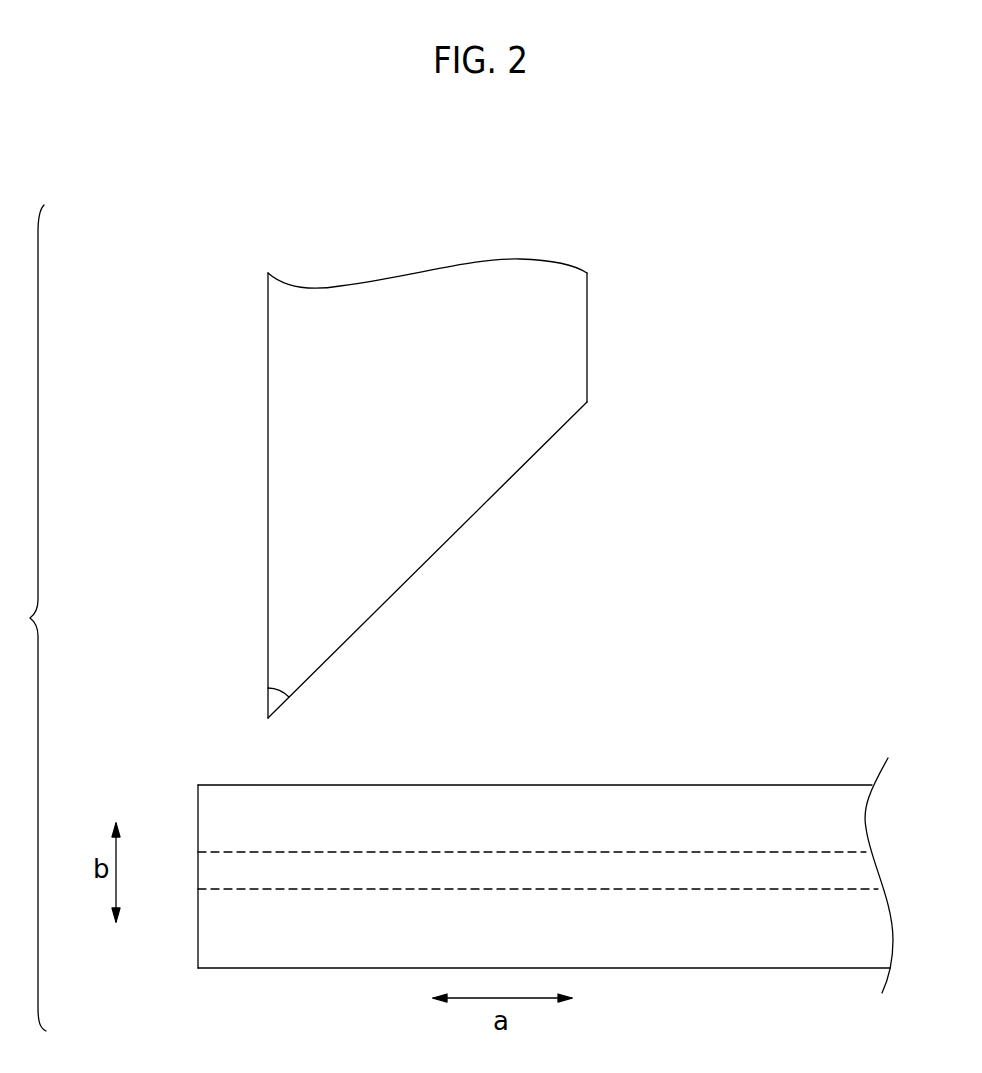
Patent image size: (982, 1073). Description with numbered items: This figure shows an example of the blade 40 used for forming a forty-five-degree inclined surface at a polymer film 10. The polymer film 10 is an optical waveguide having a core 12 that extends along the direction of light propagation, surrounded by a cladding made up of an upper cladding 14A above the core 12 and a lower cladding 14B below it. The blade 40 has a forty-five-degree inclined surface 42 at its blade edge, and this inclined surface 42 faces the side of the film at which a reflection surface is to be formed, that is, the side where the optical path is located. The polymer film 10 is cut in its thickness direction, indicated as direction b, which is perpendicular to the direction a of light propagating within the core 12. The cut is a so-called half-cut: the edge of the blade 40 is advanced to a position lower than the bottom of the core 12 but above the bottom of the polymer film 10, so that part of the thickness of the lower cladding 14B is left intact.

The polymer film 10 is at (545, 841).
The core 12 is at (497, 865).
The upper cladding 14A is at (657, 801).
The lower cladding 14B is at (712, 940).
The blade 40 is at (362, 488).
The 45°-inclined surface 42 is at (498, 487).